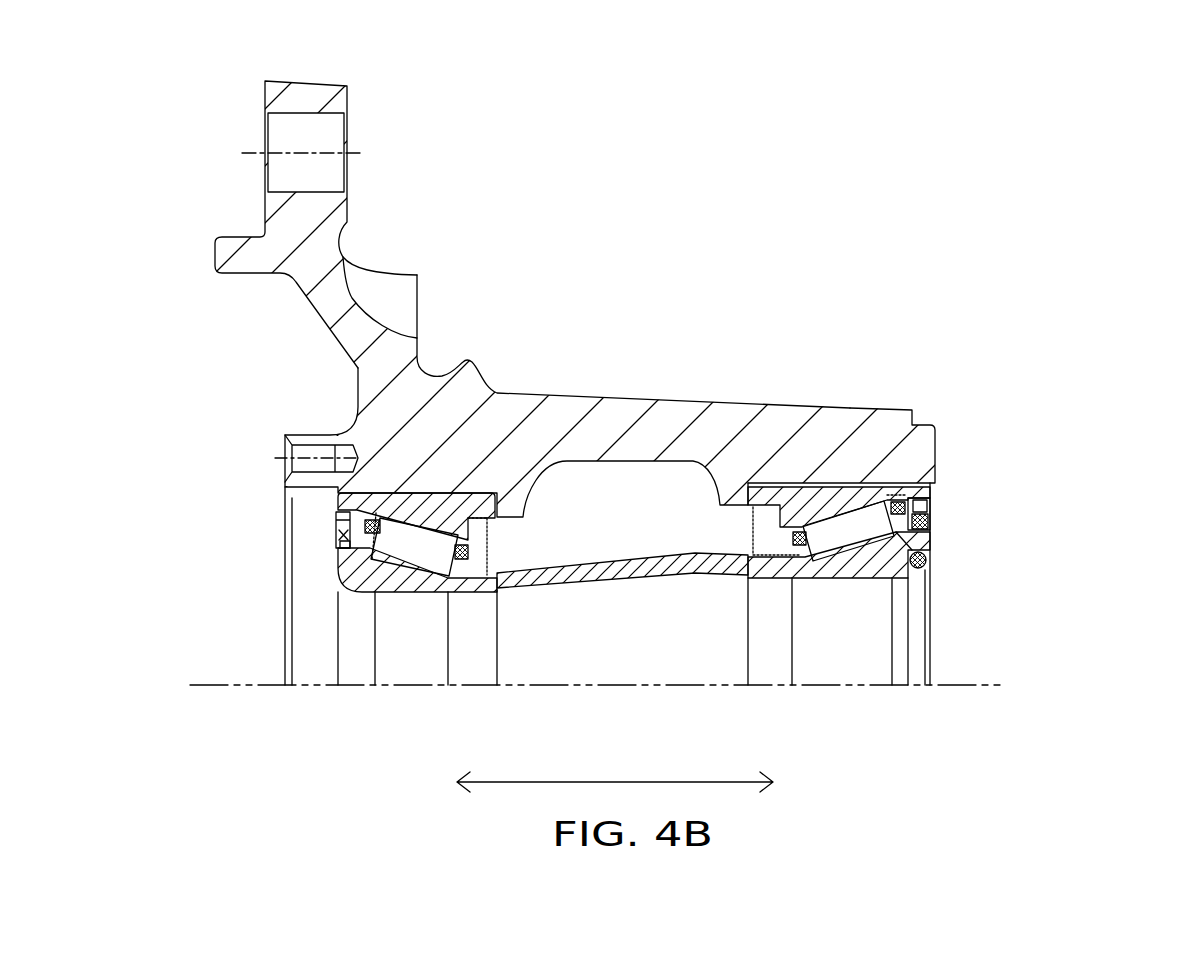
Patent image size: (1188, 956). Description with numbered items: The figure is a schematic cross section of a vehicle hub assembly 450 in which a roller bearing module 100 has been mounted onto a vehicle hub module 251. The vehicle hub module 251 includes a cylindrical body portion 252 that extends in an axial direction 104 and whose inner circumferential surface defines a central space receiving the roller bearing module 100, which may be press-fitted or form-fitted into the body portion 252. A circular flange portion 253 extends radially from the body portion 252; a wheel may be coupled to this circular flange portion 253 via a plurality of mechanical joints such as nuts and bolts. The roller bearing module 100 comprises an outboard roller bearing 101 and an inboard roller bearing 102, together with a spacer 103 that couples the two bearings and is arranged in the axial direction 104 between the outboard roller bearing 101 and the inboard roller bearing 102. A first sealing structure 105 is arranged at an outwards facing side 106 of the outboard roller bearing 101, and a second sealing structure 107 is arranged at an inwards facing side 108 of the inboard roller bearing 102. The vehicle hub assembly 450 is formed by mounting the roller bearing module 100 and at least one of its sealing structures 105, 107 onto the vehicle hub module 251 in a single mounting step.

The vehicle hub assembly 450 is at (895, 100).
The circular flange portion 253 is at (335, 218).
The cylindrical body portion 252 is at (608, 418).
The vehicle hub module 251 is at (840, 418).
The outboard roller bearing 101 is at (421, 612).
The inboard roller bearing 102 is at (852, 618).
The spacer 103 is at (615, 578).
The axial direction 104 is at (637, 783).
The first sealing structure 105 is at (337, 522).
The outwards facing side 106 is at (337, 538).
The second sealing structure 107 is at (932, 507).
The inwards facing side 108 is at (932, 540).
The roller bearing module 100 is at (961, 601).